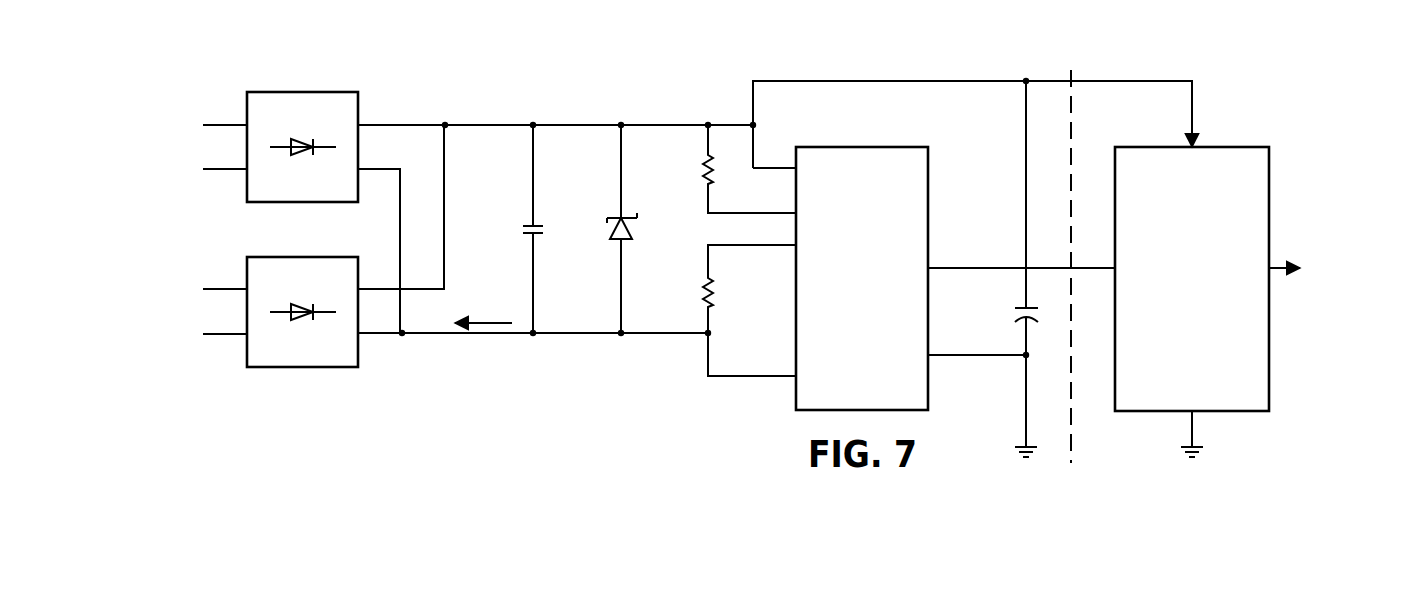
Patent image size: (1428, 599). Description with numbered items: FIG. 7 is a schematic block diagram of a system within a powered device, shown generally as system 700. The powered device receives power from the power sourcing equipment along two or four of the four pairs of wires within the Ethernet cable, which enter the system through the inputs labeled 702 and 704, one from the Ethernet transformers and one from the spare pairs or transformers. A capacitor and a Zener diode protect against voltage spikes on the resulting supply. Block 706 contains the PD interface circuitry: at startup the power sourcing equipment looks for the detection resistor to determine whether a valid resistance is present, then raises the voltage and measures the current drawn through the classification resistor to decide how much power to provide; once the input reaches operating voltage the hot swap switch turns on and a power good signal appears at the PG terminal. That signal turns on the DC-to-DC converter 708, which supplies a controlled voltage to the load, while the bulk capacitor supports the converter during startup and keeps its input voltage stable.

The system within a PD 700 is at (430, 70).
The wire pairs from Ethernet transformers 702 is at (303, 92).
The spare wire pairs 704 is at (300, 367).
The PD interface circuitry block 706 is at (862, 147).
The DC-to-DC converter 708 is at (1220, 147).